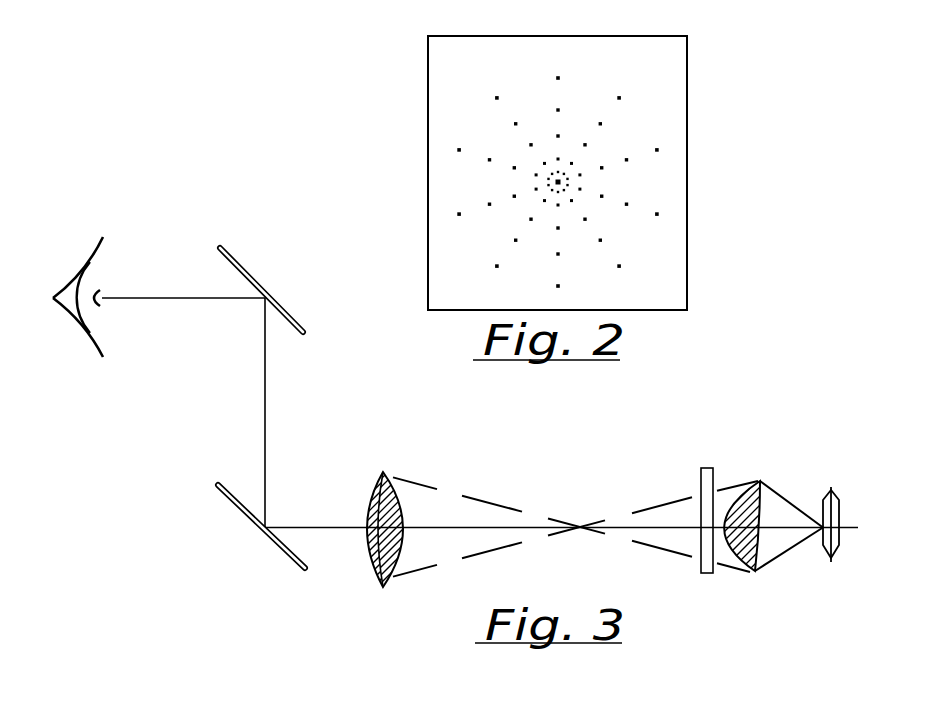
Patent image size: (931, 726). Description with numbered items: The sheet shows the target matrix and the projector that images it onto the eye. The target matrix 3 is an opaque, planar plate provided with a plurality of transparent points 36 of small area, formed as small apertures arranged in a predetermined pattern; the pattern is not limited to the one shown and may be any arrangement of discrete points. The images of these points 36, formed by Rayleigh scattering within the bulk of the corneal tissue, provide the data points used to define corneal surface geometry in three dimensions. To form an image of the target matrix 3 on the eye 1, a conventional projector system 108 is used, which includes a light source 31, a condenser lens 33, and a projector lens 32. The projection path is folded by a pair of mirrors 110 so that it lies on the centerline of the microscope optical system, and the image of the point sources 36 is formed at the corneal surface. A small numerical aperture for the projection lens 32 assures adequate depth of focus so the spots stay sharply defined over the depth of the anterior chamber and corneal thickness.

In FIG. 3, the eye 1 is at (90, 320).
In FIG. 2, the target matrix 3 is at (668, 118).
In FIG. 3, the target matrix 3 is at (703, 469).
In FIG. 2, the transparent points 36 is at (660, 213).
In FIG. 3, the projector system 108 is at (340, 585).
In FIG. 3, the mirrors 110 is at (250, 273).
In FIG. 3, the light source 31 is at (834, 497).
In FIG. 3, the projector lens 32 is at (382, 472).
In FIG. 3, the condenser lens 33 is at (759, 480).